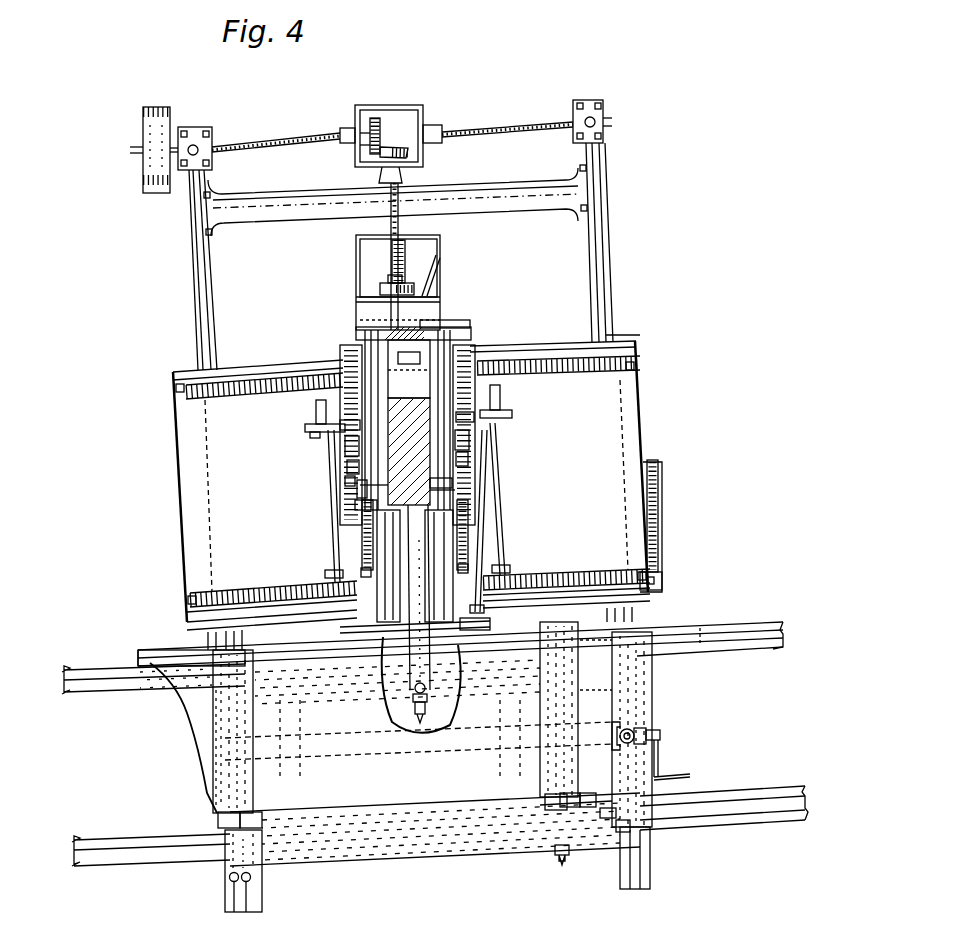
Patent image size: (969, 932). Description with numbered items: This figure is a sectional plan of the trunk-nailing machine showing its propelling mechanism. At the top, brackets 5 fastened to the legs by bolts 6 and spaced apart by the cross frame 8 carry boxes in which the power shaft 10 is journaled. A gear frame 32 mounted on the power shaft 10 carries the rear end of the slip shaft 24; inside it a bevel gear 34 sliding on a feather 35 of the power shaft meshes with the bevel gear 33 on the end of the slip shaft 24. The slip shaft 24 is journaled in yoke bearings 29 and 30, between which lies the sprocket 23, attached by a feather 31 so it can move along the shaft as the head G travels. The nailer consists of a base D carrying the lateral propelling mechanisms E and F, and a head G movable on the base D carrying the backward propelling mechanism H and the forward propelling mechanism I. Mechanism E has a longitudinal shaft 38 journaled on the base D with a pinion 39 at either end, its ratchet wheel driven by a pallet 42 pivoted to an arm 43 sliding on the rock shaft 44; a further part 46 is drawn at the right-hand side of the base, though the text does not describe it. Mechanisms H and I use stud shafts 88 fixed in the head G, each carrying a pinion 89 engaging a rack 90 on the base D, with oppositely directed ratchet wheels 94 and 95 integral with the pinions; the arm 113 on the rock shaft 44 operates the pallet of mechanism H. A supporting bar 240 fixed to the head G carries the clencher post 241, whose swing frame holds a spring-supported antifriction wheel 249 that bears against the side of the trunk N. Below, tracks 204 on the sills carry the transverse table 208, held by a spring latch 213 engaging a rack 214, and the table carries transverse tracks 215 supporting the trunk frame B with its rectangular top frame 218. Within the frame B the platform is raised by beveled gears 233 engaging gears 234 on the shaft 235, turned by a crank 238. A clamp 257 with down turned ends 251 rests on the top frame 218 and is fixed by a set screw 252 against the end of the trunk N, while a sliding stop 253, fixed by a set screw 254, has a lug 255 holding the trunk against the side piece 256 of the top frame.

The brackets 5 is at (605, 240).
The bolts 6 is at (614, 338).
The cross frame 8 is at (550, 205).
The power shaft 10 is at (257, 143).
The sprocket 23 is at (380, 289).
The slip shaft 24 is at (390, 226).
The yoke bearing 29 is at (437, 270).
The yoke bearing 30 is at (357, 258).
The feather 31 is at (400, 226).
The gear frame 32 is at (372, 108).
The bevel gear 33 is at (412, 152).
The bevel gear 34 is at (382, 122).
The feather 35 is at (460, 128).
The longitudinal shaft 38 is at (330, 547).
The pinion 39 is at (305, 592).
The pallet 42 is at (305, 428).
The arm 43 is at (318, 412).
The rock shaft 44 is at (365, 345).
The table frame 46 is at (602, 362).
The stud shafts 88 is at (357, 488).
The pinion 89 is at (345, 456).
The rack 90 is at (345, 370).
The ratchet wheel 94 is at (470, 432).
The ratchet wheel 95 is at (347, 466).
The arm 113 is at (362, 516).
The tracks 204 is at (252, 887).
The transverse table 208 is at (684, 626).
The spring latch 213 is at (790, 800).
The rack 214 is at (662, 520).
The tracks 215 is at (757, 625).
The top frame 218 is at (404, 851).
The beveled gears 233 is at (632, 722).
The gears 234 is at (660, 728).
The shaft 235 is at (490, 736).
The crank 238 is at (690, 776).
The supporting bar 240 is at (470, 535).
The clencher post 241 is at (412, 693).
The antifriction wheel 249 is at (450, 705).
The down turned ends 251 is at (548, 628).
The set screw 252 is at (556, 864).
The sliding stop 253 is at (222, 812).
The set screw 254 is at (230, 812).
The lug 255 is at (300, 812).
The side piece 256 is at (188, 650).
The clamp 257 is at (622, 686).
The trunk frame B is at (185, 717).
The base D is at (300, 545).
The lateral propelling mechanism E is at (500, 422).
The lateral propelling mechanism F is at (305, 432).
The head G is at (388, 480).
The backward propelling mechanism H is at (452, 482).
The forward propelling mechanism I is at (345, 478).
The trunk N is at (389, 614).